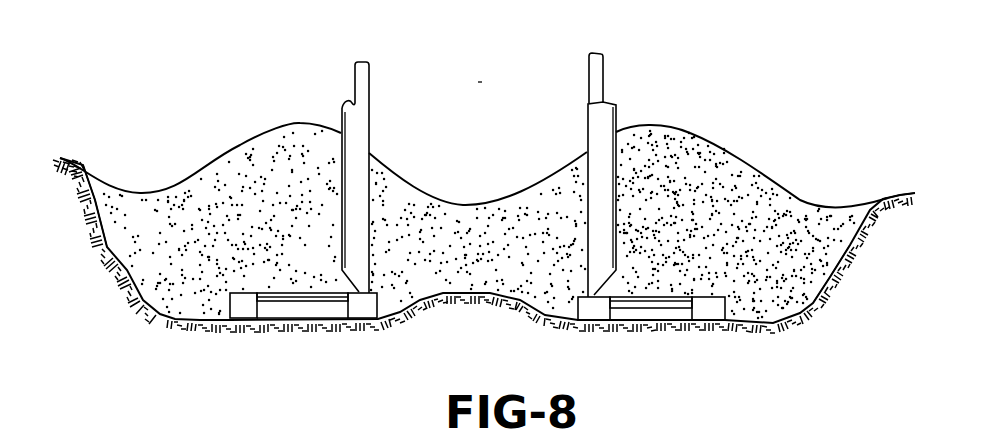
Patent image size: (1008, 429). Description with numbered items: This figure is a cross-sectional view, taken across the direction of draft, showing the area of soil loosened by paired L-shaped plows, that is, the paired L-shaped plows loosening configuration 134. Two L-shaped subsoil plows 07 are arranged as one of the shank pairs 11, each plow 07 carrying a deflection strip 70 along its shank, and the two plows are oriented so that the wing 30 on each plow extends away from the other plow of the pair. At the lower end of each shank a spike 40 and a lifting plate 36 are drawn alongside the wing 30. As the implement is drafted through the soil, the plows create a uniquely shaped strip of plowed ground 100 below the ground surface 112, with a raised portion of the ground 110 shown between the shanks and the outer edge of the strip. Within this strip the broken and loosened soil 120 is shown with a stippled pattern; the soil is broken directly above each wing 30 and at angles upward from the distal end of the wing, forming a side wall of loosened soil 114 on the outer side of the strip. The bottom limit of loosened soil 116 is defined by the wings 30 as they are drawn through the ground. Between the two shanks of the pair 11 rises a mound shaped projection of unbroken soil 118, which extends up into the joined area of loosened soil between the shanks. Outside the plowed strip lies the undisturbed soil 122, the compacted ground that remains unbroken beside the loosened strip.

The shank pairs 11 is at (748, 108).
The subsoil plow 07 is at (387, 93).
The deflection strip 70 is at (343, 108).
The paired L-shaped plows loosening configuration 134 is at (483, 76).
The strip of plowed ground 100 is at (485, 209).
The broken and loosened soil 120 is at (480, 266).
The mound shaped projection of unbroken soil 118 is at (469, 306).
The mound 110 is at (814, 133).
The ground surface 112 is at (908, 190).
The side wall of loosened soil 114 is at (830, 277).
The undisturbed soil 122 is at (60, 158).
The bottom limit of loosened soil 116 is at (580, 321).
The spike 40 is at (243, 308).
The wing 30 is at (290, 306).
The lifting plate 36 is at (333, 312).